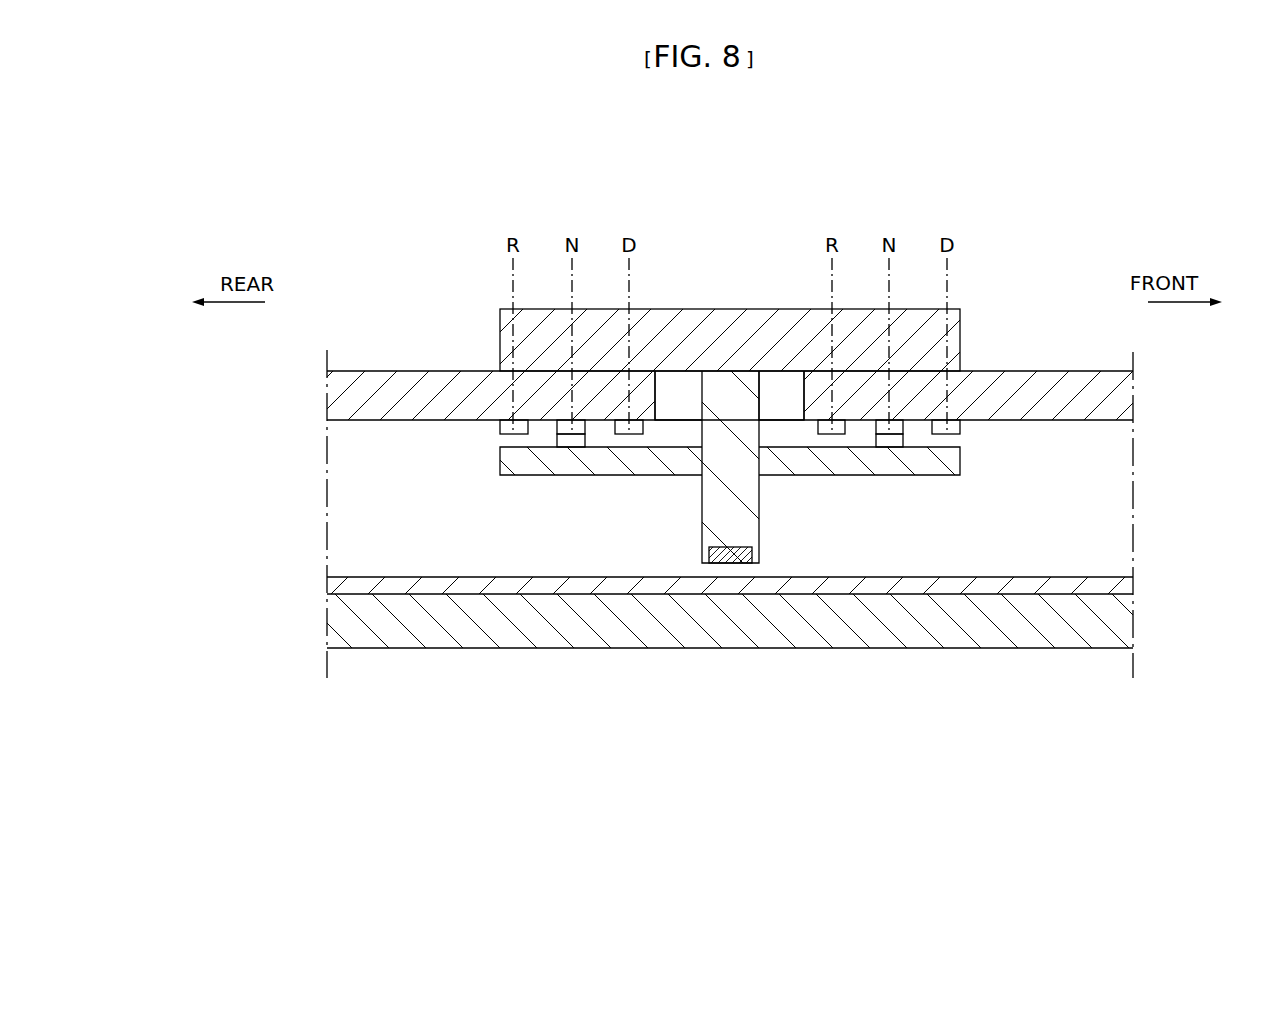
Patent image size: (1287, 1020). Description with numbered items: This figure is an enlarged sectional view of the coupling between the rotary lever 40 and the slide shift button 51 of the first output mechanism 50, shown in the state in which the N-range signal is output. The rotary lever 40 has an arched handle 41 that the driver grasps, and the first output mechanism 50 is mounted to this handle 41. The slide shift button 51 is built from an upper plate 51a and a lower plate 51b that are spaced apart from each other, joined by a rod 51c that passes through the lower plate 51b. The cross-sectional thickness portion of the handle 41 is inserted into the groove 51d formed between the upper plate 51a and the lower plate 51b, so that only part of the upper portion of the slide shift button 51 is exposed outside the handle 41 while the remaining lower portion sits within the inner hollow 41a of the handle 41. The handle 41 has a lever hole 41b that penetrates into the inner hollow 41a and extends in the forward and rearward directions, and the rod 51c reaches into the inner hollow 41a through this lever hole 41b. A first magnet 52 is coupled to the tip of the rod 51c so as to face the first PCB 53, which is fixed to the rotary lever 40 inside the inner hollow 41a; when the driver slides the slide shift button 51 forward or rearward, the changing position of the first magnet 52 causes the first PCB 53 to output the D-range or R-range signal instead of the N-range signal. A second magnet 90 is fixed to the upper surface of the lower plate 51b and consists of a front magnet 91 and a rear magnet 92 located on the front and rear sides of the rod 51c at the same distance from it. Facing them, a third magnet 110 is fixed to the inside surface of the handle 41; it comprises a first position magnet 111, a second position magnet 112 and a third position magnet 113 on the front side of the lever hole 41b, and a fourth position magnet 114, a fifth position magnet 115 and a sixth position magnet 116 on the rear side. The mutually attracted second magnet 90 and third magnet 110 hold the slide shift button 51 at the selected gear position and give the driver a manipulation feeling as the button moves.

The rotary lever 40 is at (624, 662).
The handle 41 is at (352, 396).
The inner hollow 41a is at (1112, 522).
The lever hole 41b is at (657, 405).
The first output mechanism 50 is at (709, 497).
The slide shift button 51 is at (703, 296).
The upper plate 51a is at (748, 328).
The lower plate 51b is at (948, 461).
The rod 51c is at (745, 517).
The groove 51d is at (790, 433).
The first magnet 52 is at (740, 563).
The first PCB 53 is at (1118, 590).
The second magnet 90 is at (731, 581).
The front magnet 91 is at (893, 439).
The rear magnet 92 is at (567, 441).
The third magnet 110 is at (640, 552).
The first position magnet 111 is at (950, 427).
The second position magnet 112 is at (898, 423).
The third position magnet 113 is at (830, 425).
The fourth position magnet 114 is at (634, 425).
The fifth position magnet 115 is at (562, 424).
The sixth position magnet 116 is at (512, 428).